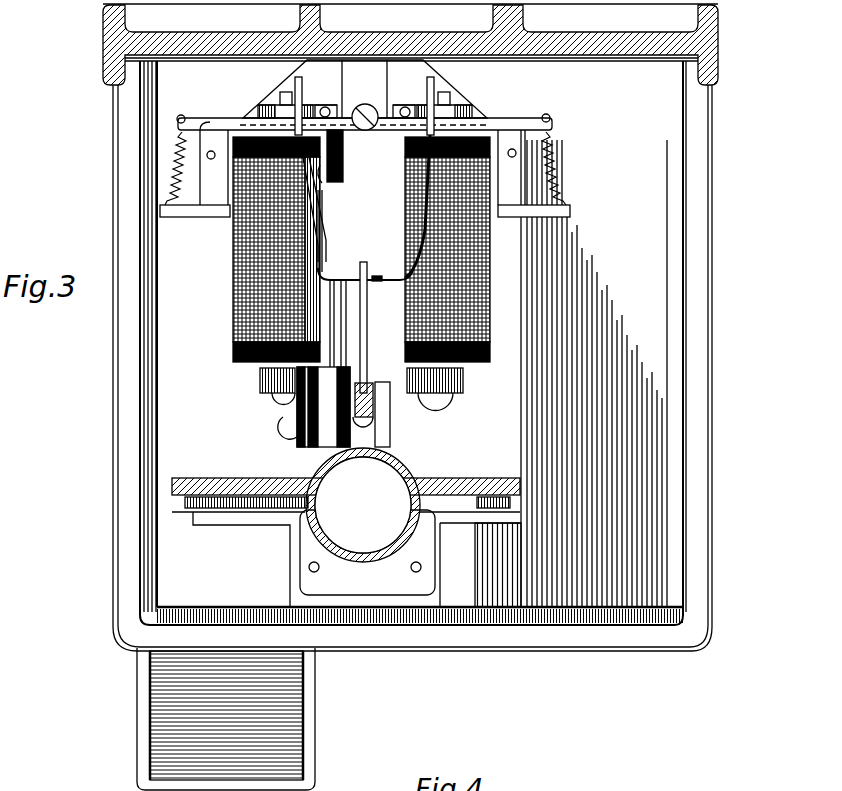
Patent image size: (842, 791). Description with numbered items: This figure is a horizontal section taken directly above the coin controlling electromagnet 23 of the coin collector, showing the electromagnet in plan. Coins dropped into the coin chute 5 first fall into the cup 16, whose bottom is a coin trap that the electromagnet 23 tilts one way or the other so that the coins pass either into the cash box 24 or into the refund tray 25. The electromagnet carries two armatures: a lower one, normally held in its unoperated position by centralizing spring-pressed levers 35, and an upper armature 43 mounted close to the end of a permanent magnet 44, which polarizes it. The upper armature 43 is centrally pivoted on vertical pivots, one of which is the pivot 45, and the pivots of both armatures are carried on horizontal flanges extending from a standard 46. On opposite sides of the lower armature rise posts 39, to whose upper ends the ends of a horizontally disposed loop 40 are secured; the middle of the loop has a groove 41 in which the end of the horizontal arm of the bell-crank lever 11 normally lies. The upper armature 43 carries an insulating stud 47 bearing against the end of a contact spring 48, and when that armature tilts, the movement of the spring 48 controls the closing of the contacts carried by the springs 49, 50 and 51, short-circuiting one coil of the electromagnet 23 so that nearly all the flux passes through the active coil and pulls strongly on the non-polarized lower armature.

The coin chute 5 is at (245, 512).
The bell-crank lever 11 is at (367, 312).
The cup 16 is at (367, 521).
The electromagnet 23 is at (243, 328).
The cash box 24 is at (553, 368).
The refund tray 25 is at (226, 719).
The centralizing spring-pressed levers 35 is at (218, 120).
The posts 39 is at (302, 89).
The loop 40 is at (421, 233).
The groove 41 is at (379, 276).
The upper armature 43 is at (266, 108).
The permanent magnet 44 is at (360, 275).
The vertical pivot 45 is at (368, 129).
The standard 46 is at (365, 89).
The insulating stud 47 is at (343, 172).
The contact spring 48 is at (323, 184).
The contact spring 49 is at (305, 237).
The contact spring 50 is at (322, 262).
The contact spring 51 is at (328, 237).